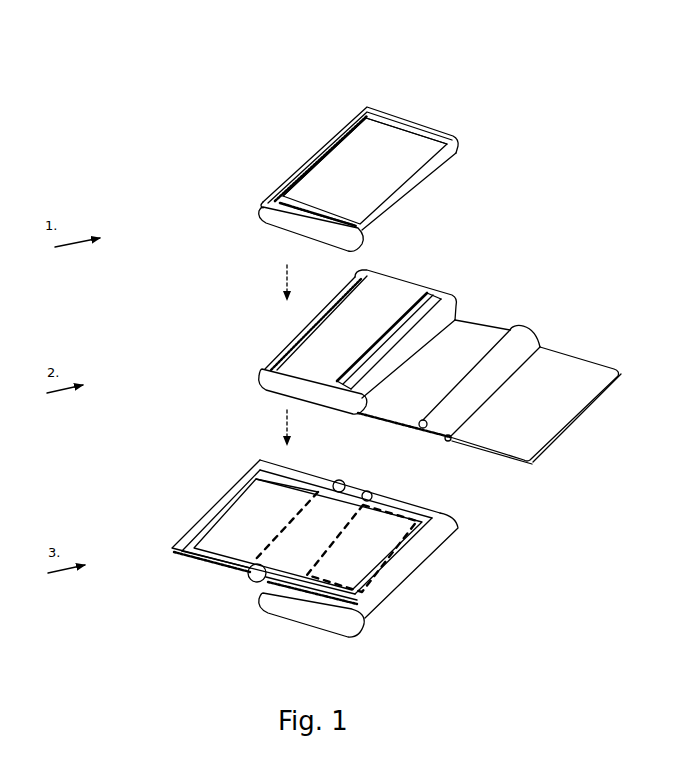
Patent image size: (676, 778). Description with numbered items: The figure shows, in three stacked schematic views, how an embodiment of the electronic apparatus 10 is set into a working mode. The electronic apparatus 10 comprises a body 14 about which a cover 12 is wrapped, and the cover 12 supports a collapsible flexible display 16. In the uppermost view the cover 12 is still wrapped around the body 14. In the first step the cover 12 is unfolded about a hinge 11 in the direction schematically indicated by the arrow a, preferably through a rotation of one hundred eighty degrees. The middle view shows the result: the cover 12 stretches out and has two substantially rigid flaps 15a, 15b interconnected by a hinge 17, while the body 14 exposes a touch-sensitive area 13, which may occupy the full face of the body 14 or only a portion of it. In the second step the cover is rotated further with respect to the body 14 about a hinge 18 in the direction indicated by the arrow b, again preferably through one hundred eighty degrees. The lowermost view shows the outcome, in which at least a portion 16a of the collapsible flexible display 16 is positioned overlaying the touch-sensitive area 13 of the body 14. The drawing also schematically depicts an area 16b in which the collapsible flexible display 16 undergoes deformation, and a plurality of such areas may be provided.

The electronic apparatus 10 is at (45, 77).
The hinge 11 is at (262, 203).
The cover 12 is at (422, 143).
The touch-sensitive area 13 is at (393, 290).
The body 14 is at (290, 227).
The rigid flap 15a is at (470, 332).
The rigid flap 15b is at (568, 363).
The collapsible flexible display 16 is at (248, 515).
The portion of the collapsible flexible display 16a is at (363, 555).
The deformation area 16b is at (300, 507).
The hinge 17 is at (523, 340).
The hinge 18 is at (455, 318).
The arrow a is at (182, 147).
The arrow b is at (420, 368).